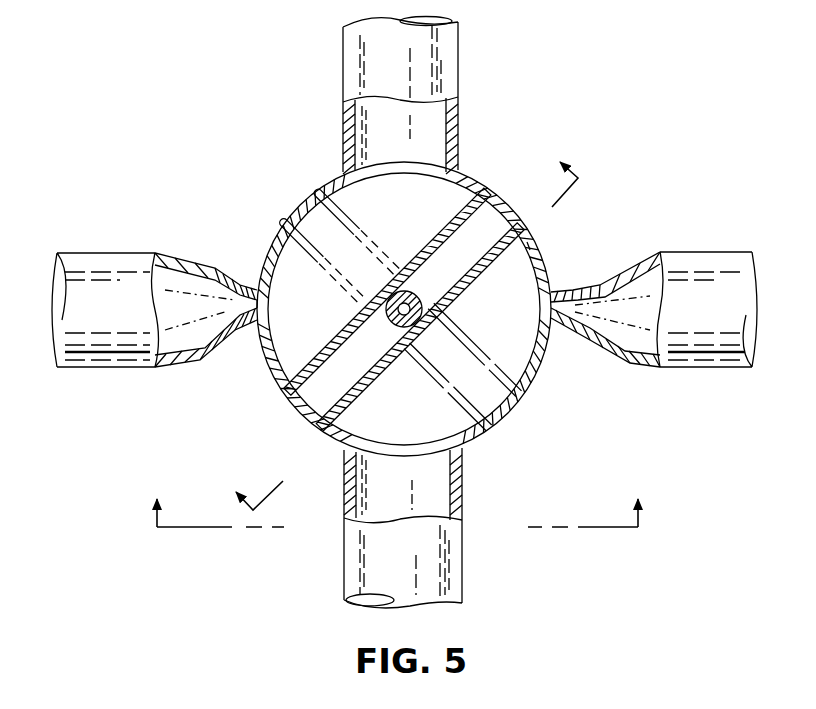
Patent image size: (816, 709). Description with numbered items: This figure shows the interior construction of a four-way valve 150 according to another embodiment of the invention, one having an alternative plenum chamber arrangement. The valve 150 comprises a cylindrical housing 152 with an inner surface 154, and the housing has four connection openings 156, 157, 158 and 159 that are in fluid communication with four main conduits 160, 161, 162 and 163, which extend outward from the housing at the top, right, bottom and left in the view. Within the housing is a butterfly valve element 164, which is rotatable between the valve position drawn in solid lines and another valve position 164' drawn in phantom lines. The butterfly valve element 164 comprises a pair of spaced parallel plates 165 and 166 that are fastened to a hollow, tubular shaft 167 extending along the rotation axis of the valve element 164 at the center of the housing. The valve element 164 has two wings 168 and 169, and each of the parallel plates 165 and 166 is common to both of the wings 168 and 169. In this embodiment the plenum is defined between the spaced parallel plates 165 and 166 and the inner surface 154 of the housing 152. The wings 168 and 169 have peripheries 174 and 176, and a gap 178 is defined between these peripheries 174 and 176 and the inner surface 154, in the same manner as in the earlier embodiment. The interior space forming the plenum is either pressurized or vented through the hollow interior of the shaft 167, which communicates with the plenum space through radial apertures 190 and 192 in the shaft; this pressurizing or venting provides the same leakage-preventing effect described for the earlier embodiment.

The four-way valve 150 is at (592, 116).
The cylindrical housing 152 is at (300, 196).
The inner surface 154 is at (278, 243).
The connection opening 156 is at (403, 157).
The connection opening 157 is at (580, 343).
The connection opening 158 is at (403, 463).
The connection opening 159 is at (197, 363).
The main conduit 160 is at (453, 87).
The main conduit 161 is at (710, 360).
The main conduit 162 is at (462, 543).
The main conduit 163 is at (100, 363).
The butterfly valve element 164 is at (317, 267).
The valve position 164' is at (338, 202).
The parallel plate 165 is at (446, 226).
The parallel plate 166 is at (508, 238).
The hollow tubular shaft 167 is at (395, 305).
The wing 168 is at (394, 389).
The wing 169 is at (471, 303).
The periphery 174 is at (283, 378).
The periphery 176 is at (470, 188).
The gap 178 is at (529, 246).
The radial aperture 190 is at (398, 328).
The radial aperture 192 is at (411, 300).